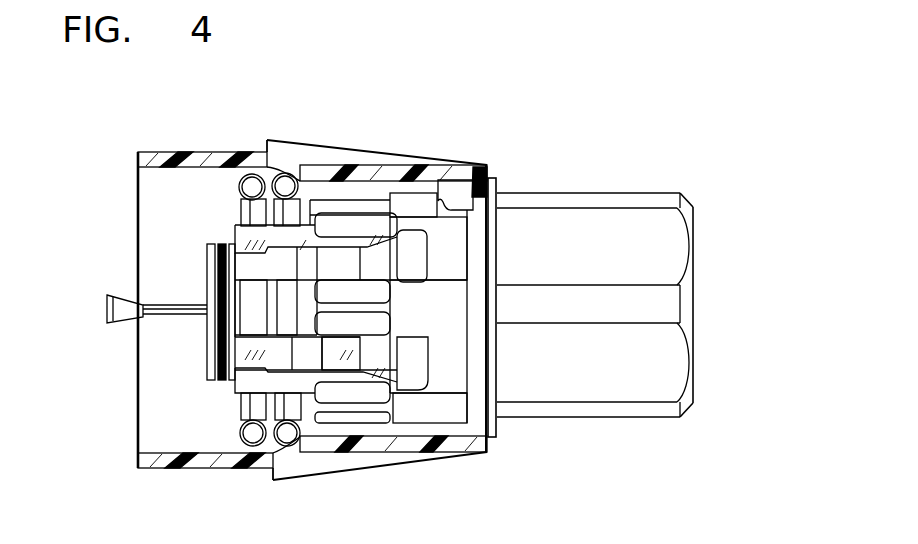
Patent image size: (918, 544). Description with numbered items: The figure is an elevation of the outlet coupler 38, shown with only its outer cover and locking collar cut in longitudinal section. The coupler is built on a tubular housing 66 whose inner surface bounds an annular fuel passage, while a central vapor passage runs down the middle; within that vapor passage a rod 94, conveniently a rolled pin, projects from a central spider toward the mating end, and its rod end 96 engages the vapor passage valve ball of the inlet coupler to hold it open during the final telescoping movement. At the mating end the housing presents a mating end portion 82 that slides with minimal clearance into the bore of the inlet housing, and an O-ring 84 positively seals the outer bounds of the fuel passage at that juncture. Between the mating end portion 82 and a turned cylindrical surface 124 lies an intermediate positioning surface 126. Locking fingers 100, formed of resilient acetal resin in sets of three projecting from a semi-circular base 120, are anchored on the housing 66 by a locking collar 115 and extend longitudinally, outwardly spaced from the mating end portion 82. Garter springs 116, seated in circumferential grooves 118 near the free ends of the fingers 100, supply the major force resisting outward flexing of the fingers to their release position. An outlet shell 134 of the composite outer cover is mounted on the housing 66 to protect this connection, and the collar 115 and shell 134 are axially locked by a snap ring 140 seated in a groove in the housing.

The outlet coupler 38 is at (599, 96).
The tubular housing 66 is at (603, 193).
The mating end portion 82 is at (253, 267).
The O-ring 84 is at (228, 243).
The rod 94 is at (170, 318).
The rod end 96 is at (133, 300).
The fingers 100 is at (340, 275).
The locking collar 115 is at (457, 182).
The garter springs 116 is at (288, 175).
The grooves 118 is at (253, 408).
The semi-circular base 120 is at (447, 255).
The cylindrical surface 124 is at (415, 358).
The positioning surface 126 is at (340, 355).
The outlet shell 134 is at (433, 165).
The snap ring 140 is at (498, 183).